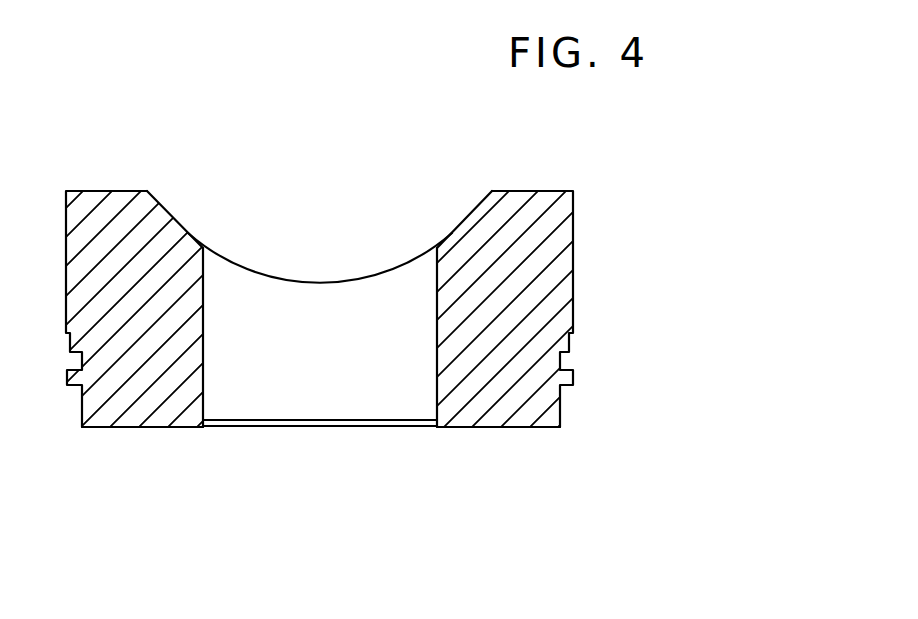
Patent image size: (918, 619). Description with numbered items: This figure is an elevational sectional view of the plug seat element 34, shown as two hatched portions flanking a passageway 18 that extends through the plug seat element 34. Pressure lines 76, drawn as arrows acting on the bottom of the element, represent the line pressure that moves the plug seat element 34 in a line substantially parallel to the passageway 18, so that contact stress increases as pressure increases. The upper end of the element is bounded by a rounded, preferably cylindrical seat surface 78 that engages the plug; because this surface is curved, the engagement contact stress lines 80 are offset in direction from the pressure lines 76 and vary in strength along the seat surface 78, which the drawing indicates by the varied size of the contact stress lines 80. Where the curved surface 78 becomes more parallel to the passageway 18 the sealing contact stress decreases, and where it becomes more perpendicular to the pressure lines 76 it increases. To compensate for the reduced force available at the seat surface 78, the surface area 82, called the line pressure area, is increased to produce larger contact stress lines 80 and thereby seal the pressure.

The plug seat element 34 is at (654, 193).
The contact stress lines 80 is at (192, 223).
The seat surface 78 is at (288, 280).
The surface area 82 is at (182, 428).
The passageway 18 is at (328, 373).
The pressure lines 76 is at (162, 439).